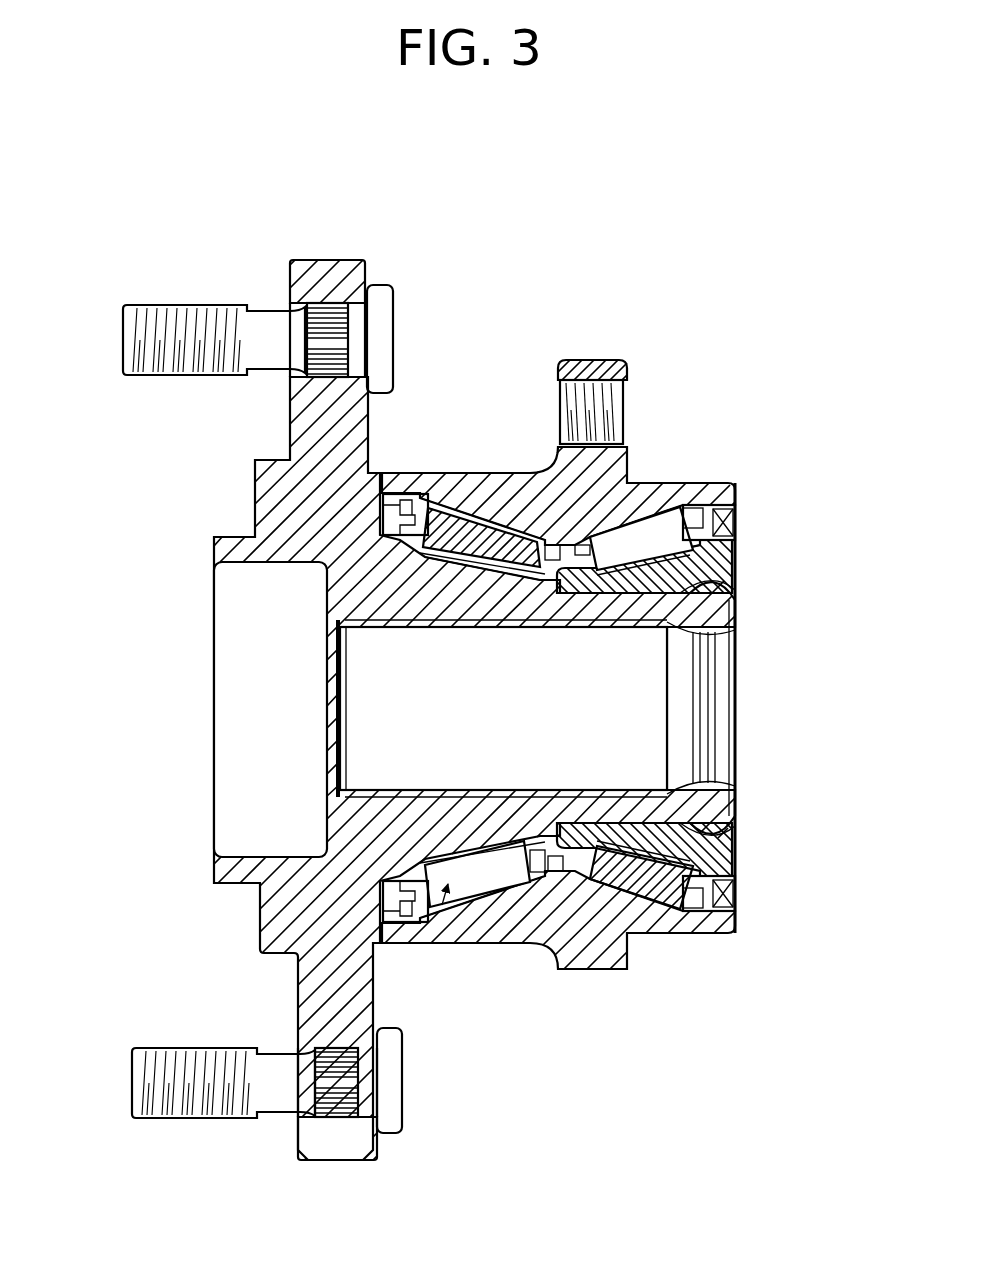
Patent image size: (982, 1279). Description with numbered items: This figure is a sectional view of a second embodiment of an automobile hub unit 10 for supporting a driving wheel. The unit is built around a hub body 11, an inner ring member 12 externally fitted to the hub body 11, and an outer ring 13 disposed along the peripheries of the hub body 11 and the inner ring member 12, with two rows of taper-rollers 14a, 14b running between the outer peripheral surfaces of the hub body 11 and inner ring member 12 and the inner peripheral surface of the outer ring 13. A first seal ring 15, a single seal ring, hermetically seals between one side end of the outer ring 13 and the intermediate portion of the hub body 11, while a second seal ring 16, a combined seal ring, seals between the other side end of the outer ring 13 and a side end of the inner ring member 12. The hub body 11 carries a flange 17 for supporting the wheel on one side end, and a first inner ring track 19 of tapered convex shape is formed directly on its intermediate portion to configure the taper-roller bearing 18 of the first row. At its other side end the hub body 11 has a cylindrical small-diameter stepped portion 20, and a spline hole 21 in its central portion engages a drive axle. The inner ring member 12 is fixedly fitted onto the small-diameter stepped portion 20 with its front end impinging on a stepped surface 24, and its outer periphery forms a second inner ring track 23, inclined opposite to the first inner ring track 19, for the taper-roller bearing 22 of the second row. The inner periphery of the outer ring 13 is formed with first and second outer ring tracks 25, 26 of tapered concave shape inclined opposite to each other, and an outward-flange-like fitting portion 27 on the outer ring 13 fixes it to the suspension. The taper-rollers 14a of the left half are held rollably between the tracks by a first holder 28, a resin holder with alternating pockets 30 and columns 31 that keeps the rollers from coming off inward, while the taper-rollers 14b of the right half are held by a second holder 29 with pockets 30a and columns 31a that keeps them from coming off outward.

The hub unit 10 is at (660, 473).
The hub body 11 is at (285, 515).
The inner ring member 12 is at (713, 553).
The outer ring 13 is at (497, 488).
The taper-rollers 14a is at (420, 505).
The taper-rollers 14b is at (658, 522).
The first seal ring 15 is at (376, 510).
The second seal ring 16 is at (740, 890).
The flange 17 is at (318, 258).
The taper-roller bearing of the first row 18 is at (457, 903).
The first inner ring track 19 is at (447, 862).
The small-diameter stepped portion 20 is at (713, 585).
The spline hole 21 is at (713, 633).
The taper-roller bearing of the second row 22 is at (636, 546).
The second inner ring track 23 is at (627, 850).
The stepped surface 24 is at (578, 570).
The first outer ring track 25 is at (452, 525).
The second outer ring track 26 is at (500, 498).
The fitting portion 27 is at (595, 358).
The first holder 28 is at (453, 552).
The second holder 29 is at (625, 922).
The pockets 30 is at (552, 905).
The pockets 30a is at (680, 503).
The columns 31 is at (510, 540).
The columns 31a is at (737, 850).